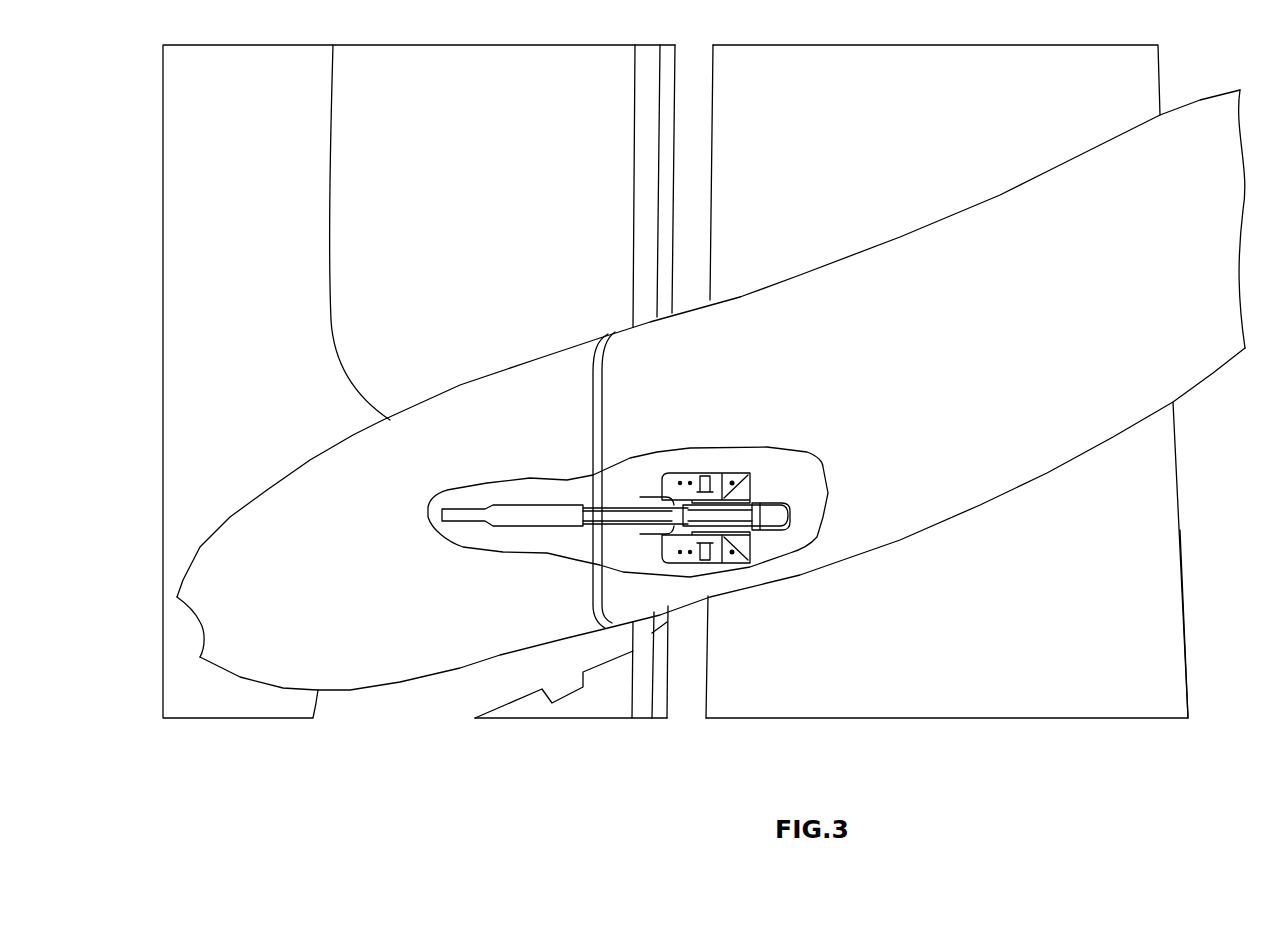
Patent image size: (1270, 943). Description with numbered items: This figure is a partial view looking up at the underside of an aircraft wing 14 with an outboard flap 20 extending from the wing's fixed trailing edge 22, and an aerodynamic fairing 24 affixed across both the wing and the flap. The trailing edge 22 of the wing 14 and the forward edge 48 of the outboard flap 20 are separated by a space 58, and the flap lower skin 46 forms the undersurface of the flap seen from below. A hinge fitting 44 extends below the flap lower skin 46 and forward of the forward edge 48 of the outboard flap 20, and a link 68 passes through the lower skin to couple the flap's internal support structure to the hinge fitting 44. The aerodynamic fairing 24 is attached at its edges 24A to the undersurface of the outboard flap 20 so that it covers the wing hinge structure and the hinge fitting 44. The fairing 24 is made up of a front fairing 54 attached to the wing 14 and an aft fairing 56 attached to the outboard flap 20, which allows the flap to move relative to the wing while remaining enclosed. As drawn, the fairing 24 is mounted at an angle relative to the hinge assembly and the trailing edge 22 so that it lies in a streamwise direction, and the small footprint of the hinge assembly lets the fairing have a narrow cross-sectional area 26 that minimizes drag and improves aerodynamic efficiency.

The wing 14 is at (215, 153).
The outboard flap 20 is at (1157, 580).
The trailing edge 22 is at (675, 77).
The aerodynamic fairing 24 is at (1196, 362).
The edges of the aerodynamic fairing 24A is at (353, 435).
The narrow cross-sectional area 26 is at (233, 595).
The hinge fitting 44 is at (698, 515).
The flap lower skin 46 is at (986, 639).
The forward edge 48 is at (706, 673).
The front fairing 54 is at (472, 407).
The aft fairing 56 is at (905, 262).
The space 58 is at (695, 120).
The link 68 is at (785, 513).